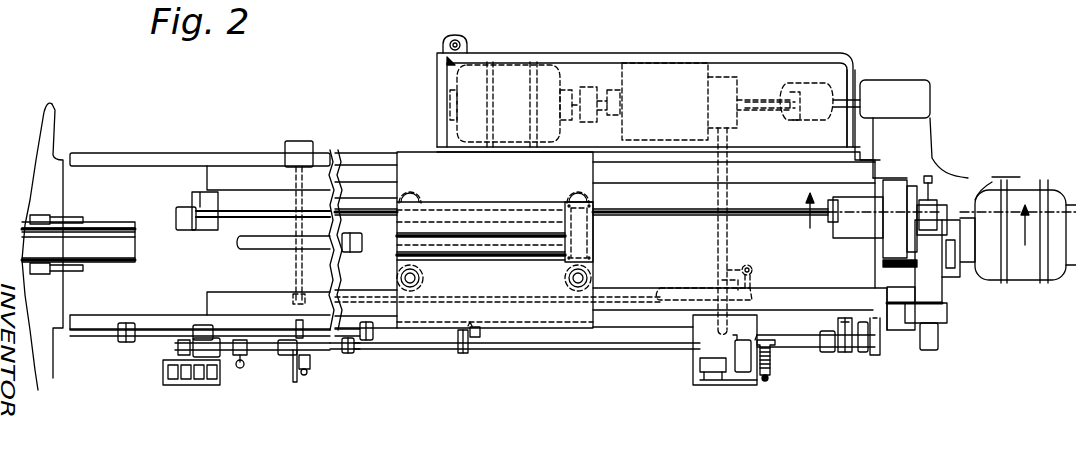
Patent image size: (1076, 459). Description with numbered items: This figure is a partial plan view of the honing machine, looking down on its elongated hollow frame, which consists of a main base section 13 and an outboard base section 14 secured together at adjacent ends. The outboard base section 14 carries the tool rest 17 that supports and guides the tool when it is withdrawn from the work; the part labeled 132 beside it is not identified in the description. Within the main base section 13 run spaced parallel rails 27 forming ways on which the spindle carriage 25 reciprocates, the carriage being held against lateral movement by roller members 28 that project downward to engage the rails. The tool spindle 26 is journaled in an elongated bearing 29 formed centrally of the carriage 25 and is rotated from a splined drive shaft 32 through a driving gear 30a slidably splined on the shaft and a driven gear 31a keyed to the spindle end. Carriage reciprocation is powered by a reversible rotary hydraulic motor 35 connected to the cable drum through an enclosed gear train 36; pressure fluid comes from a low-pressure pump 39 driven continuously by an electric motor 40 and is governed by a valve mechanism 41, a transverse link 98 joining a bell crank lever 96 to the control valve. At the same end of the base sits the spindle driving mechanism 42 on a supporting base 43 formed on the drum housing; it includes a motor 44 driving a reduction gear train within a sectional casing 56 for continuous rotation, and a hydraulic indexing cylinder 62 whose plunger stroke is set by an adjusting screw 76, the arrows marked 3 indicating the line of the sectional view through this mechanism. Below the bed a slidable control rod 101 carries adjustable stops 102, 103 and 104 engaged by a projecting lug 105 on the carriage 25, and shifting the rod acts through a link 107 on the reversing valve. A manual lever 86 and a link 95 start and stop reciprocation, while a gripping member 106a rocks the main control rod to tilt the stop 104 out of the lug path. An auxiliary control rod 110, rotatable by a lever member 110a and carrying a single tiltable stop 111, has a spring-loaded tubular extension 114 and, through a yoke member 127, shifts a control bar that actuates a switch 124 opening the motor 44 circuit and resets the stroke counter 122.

The outboard base section 14 is at (52, 128).
The main base section 13 is at (165, 175).
The tool rest 17 is at (69, 204).
The headstock bar 132 is at (132, 252).
The tool supporting spindle 26 is at (283, 248).
The spindle carriage 25 is at (424, 166).
The roller members 28 is at (420, 194).
The driven gear 31a is at (595, 241).
The elongated bearing 29 is at (522, 253).
The driving gear 30a is at (595, 211).
The electric motor 40 is at (520, 62).
The low-pressure fluid pump 39 is at (622, 70).
The valve mechanism 41 is at (737, 68).
The reversible rotary hydraulic motor 35 is at (808, 82).
The transverse link 98 is at (730, 170).
The enclosed gear train 36 is at (934, 94).
The rails 27 is at (698, 181).
The splined drive shaft 32 is at (710, 216).
The sectional casing 56 is at (856, 234).
The spindle driving mechanism 42 is at (915, 158).
The adjusting screw 76 is at (931, 186).
The cylinder 62 is at (943, 300).
The supporting base 43 is at (997, 180).
The motor 44 is at (1027, 194).
The section line FIG. 3 is at (916, 228).
The bell crank lever 96 is at (756, 258).
The link 107 is at (725, 283).
The link 95 is at (665, 295).
The adjustable stop 102 is at (296, 323).
The manual gripping member 106a is at (118, 340).
The auxiliary control rod 110 is at (562, 345).
The lever member 110a is at (244, 363).
The manual lever 86 is at (306, 372).
The adjustable stop 111 is at (347, 355).
The stop 104 is at (370, 338).
The projecting lug 105 is at (463, 353).
The adjustable stop 103 is at (480, 337).
The control rod 101 is at (655, 343).
The switch 124 is at (700, 365).
The stroke counter 122 is at (740, 355).
The yoke member 127 is at (771, 367).
The tubular extension 114 is at (818, 348).